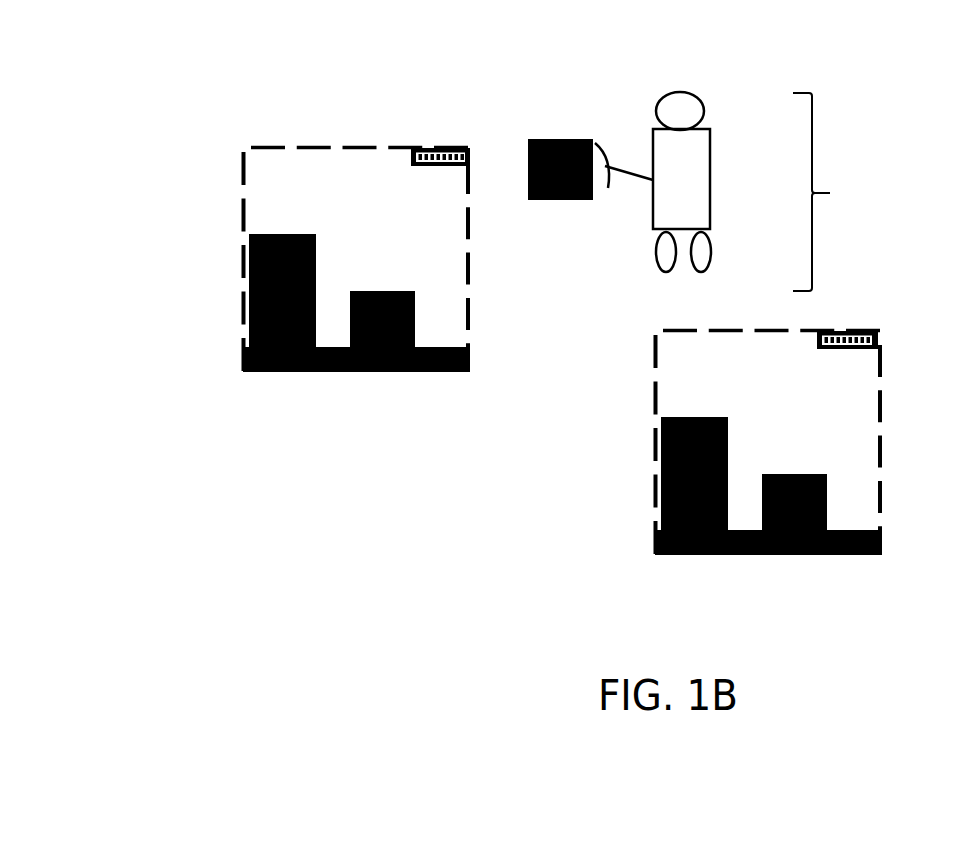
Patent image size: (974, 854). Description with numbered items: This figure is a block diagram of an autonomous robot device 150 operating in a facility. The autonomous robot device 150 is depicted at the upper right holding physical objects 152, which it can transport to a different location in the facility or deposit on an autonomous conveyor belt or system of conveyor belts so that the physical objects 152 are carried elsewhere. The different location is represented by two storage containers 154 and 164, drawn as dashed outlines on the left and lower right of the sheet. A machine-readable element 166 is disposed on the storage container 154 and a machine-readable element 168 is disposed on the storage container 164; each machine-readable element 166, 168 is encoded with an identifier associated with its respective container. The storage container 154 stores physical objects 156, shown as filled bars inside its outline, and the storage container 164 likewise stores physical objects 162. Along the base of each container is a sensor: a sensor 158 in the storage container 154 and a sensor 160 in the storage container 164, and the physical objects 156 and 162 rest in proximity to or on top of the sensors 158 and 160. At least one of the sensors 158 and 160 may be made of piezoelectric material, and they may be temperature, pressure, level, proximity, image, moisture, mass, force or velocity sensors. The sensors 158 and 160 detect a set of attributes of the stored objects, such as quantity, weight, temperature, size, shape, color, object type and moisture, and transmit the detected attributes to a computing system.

The autonomous robot device 150 is at (741, 191).
The physical objects 152 is at (560, 140).
The storage container 154 is at (243, 160).
The physical objects 156 is at (247, 263).
The sensor 158 is at (268, 368).
The sensor 160 is at (680, 553).
The physical objects 162 is at (655, 440).
The storage container 164 is at (653, 340).
The machine-readable element 166 is at (437, 148).
The machine-readable element 168 is at (850, 332).